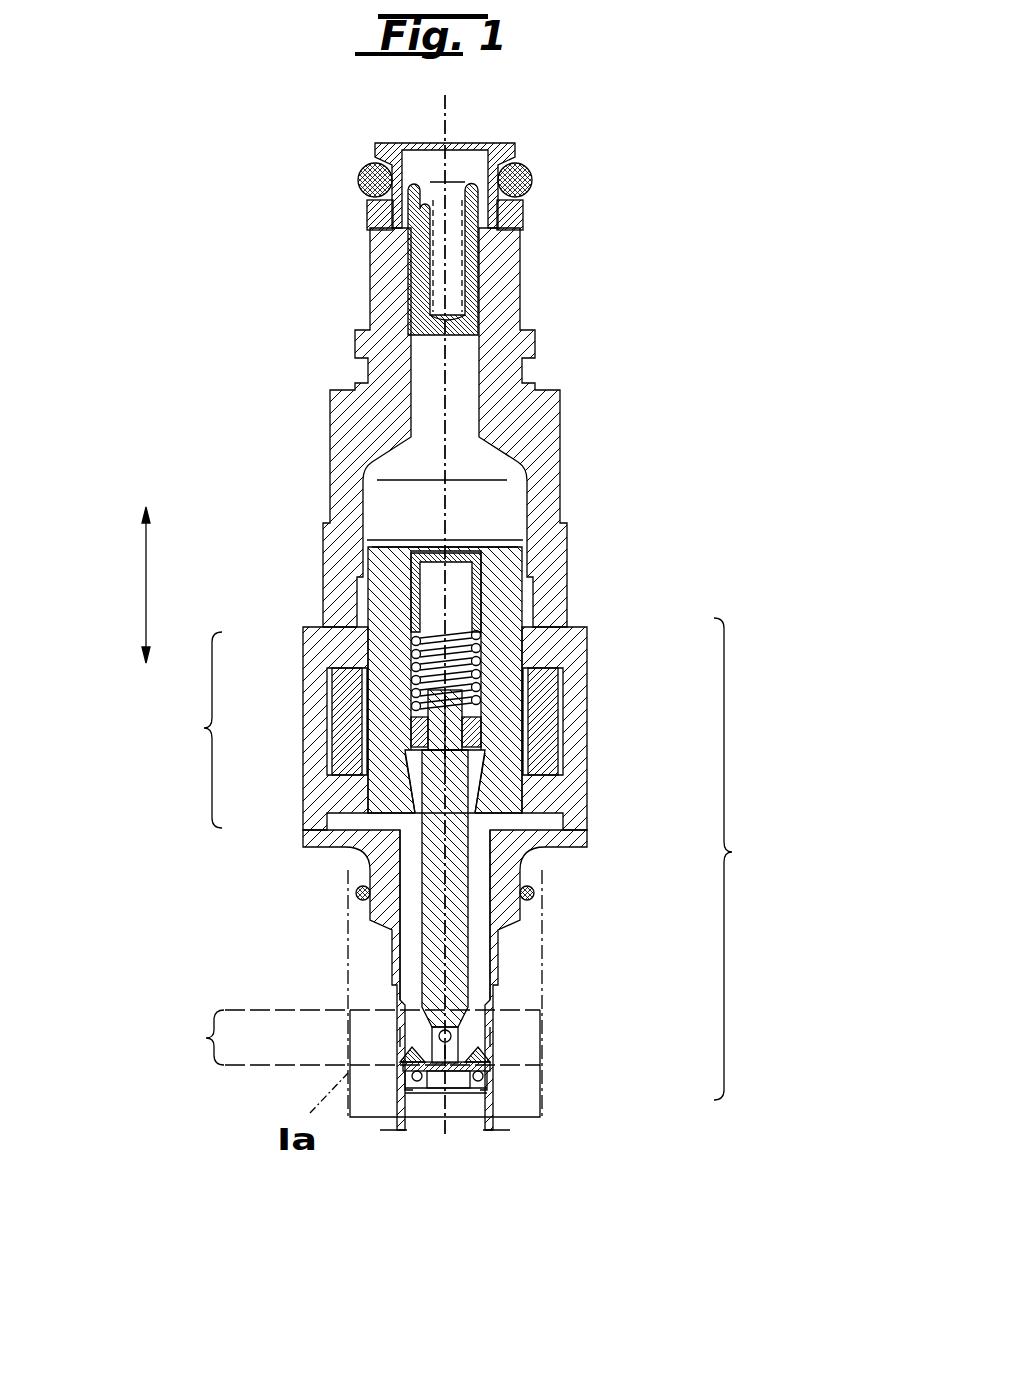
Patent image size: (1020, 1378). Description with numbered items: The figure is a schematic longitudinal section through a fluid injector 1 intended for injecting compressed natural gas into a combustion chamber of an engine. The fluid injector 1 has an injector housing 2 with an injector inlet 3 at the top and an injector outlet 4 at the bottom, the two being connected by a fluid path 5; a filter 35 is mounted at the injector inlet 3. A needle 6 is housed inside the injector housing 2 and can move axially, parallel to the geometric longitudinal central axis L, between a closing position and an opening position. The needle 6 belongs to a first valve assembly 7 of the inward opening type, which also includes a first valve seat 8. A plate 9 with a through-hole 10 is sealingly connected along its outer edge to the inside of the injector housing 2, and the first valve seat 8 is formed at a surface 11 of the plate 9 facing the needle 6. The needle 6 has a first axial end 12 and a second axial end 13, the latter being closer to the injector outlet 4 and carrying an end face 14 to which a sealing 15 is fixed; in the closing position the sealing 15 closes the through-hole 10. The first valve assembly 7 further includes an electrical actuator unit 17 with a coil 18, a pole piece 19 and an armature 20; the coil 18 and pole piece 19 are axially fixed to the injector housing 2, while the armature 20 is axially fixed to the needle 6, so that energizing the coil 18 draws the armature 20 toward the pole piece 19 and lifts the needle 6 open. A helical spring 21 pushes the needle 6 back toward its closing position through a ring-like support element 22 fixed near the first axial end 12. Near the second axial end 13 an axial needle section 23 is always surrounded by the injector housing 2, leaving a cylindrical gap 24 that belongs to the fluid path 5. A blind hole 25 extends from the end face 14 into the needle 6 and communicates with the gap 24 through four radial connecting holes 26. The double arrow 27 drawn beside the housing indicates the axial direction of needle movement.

The fluid injector 1 is at (318, 180).
The injector housing 2 is at (517, 870).
The injector inlet 3 is at (460, 153).
The injector outlet 4 is at (480, 1128).
The fluid path 5 is at (482, 927).
The needle 6 is at (435, 902).
The first valve assembly 7 is at (732, 852).
The first valve seat 8 is at (478, 1055).
The plate 9 is at (487, 1064).
The through-hole 10 is at (475, 1068).
The surface 11 is at (453, 1068).
The first axial end 12 is at (455, 710).
The second axial end 13 is at (420, 1058).
The end face 14 is at (440, 1055).
The sealing 15 is at (408, 1075).
The electrical actuator unit 17 is at (204, 728).
The coil 18 is at (345, 697).
The pole piece 19 is at (380, 688).
The armature 20 is at (390, 797).
The spring 21 is at (415, 640).
The ring-like support element 22 is at (478, 732).
The axial needle section 23 is at (206, 1038).
The gap 24 is at (480, 1035).
The blind hole 25 is at (447, 1070).
The connecting holes 26 is at (478, 1040).
The stroke direction 27 is at (146, 585).
The filter 35 is at (415, 262).
The longitudinal central axis L is at (440, 126).